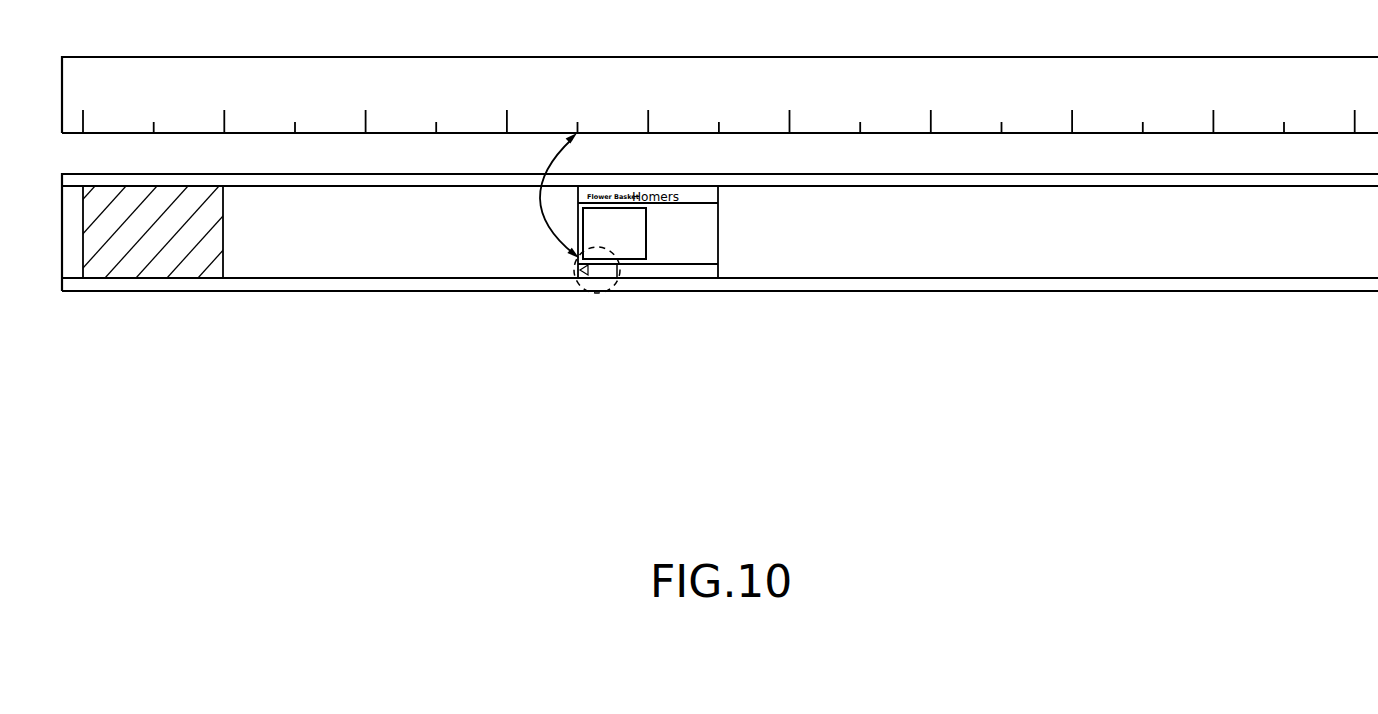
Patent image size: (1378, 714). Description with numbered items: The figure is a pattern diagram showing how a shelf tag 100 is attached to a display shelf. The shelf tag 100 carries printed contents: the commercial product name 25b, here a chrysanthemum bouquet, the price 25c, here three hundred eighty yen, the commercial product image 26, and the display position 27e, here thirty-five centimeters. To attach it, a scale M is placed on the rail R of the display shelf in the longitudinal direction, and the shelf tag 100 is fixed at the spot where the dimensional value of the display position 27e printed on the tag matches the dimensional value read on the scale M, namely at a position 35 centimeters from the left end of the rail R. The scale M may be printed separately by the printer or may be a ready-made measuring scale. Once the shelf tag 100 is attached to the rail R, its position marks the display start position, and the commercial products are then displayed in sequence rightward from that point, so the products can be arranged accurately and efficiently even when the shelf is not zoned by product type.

The scale M is at (835, 57).
The rail R is at (903, 283).
The shelf tag 100 is at (225, 232).
The commercial product image 26 is at (625, 250).
The commercial product name 25b is at (704, 218).
The price 25c is at (688, 264).
The display position 27e is at (570, 267).
The mark detail region 35 is at (561, 323).